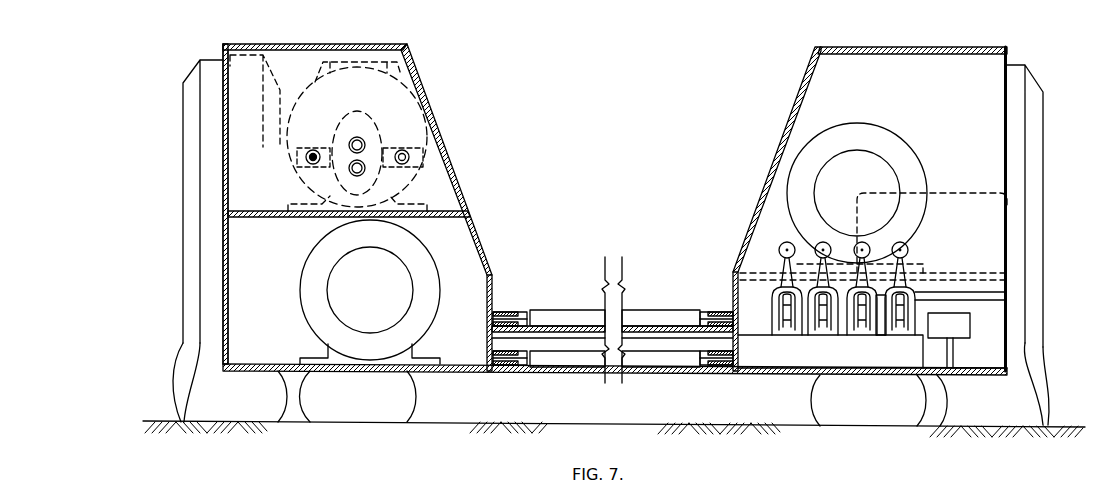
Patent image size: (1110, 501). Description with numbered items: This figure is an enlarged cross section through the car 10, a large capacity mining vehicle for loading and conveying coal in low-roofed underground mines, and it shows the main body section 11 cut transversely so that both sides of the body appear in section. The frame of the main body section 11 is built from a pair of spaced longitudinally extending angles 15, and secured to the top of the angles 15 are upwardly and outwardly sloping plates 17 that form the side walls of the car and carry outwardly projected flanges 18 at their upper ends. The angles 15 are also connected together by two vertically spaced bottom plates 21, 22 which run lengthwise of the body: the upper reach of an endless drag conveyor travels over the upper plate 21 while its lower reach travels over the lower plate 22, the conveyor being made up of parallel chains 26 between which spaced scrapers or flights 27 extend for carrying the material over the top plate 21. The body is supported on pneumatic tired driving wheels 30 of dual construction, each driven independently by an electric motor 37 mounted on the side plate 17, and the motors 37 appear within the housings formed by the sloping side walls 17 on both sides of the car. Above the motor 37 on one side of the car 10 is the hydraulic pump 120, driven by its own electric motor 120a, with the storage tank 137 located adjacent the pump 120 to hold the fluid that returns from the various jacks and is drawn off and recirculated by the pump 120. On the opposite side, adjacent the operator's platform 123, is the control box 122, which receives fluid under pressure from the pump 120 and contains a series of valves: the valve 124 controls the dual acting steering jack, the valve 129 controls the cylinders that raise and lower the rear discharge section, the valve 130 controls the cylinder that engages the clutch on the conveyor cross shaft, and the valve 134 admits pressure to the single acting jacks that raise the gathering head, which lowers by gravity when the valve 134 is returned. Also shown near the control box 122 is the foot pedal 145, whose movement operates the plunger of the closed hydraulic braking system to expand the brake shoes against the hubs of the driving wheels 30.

The car 10 is at (1080, 243).
The main body section 11 is at (616, 234).
The angles 15 is at (491, 277).
The sloping plates 17 is at (443, 148).
The flanges 18 is at (297, 43).
The upper bottom plate 21 is at (558, 326).
The lower bottom plate 22 is at (577, 373).
The chains 26 is at (510, 312).
The flights 27 is at (633, 315).
The driving wheels 30 is at (203, 281).
The electric motor 37 is at (379, 319).
The hydraulic pump 120 is at (380, 133).
The electric motor 120a is at (387, 92).
The control box 122 is at (846, 360).
The operator's platform 123 is at (977, 377).
The valve 124 is at (902, 333).
The valve 129 is at (868, 327).
The valve 130 is at (815, 328).
The valve 134 is at (773, 310).
The storage tank 137 is at (273, 192).
The foot pedal 145 is at (968, 330).